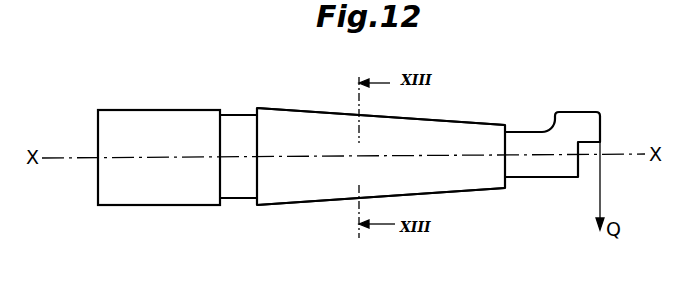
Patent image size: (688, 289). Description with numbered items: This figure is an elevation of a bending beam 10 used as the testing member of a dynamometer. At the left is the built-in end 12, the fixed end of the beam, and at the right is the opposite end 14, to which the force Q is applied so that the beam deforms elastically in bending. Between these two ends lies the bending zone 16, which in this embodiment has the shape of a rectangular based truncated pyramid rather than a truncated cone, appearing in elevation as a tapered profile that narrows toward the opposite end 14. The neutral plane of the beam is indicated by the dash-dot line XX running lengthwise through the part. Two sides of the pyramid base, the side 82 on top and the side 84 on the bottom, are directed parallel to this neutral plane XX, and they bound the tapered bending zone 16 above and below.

The bending beam 10 is at (349, 173).
The built-in end 12 is at (165, 196).
The opposite end 14 is at (548, 172).
The bending zone 16 is at (290, 194).
The side 82 is at (325, 108).
The side 84 is at (346, 201).